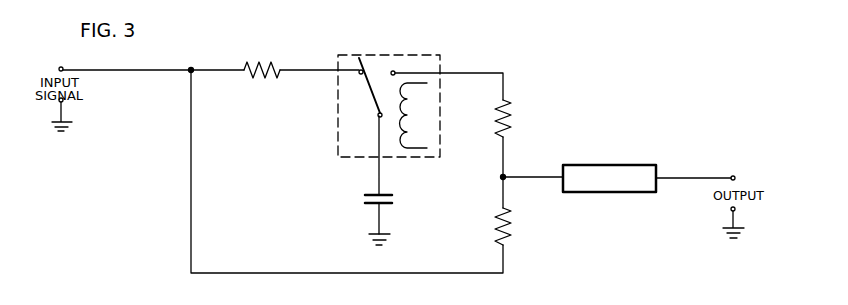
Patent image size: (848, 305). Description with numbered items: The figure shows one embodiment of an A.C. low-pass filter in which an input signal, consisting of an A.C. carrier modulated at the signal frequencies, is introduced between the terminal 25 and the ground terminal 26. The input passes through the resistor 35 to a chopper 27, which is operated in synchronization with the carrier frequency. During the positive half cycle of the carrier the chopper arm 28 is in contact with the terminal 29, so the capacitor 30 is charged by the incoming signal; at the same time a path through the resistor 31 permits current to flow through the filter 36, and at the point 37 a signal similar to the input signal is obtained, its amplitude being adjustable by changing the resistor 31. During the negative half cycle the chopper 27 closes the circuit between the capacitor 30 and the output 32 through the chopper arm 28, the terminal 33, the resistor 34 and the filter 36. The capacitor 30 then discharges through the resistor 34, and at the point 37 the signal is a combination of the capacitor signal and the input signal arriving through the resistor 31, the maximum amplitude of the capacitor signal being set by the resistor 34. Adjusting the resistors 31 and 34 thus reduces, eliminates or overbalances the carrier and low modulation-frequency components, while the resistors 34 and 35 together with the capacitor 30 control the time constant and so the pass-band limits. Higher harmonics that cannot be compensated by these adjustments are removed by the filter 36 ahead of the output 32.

The terminal 25 is at (59, 68).
The terminal (ground) 26 is at (62, 102).
The chopper 27 is at (408, 118).
The chopper arm 28 is at (372, 78).
The terminal 29 is at (358, 70).
The capacitor 30 is at (365, 198).
The resistor 31 is at (509, 229).
The output 32 is at (735, 178).
The terminal 33 is at (396, 71).
The resistor 34 is at (511, 109).
The resistor 35 is at (253, 62).
The filter 36 is at (614, 164).
The point 37 is at (500, 178).